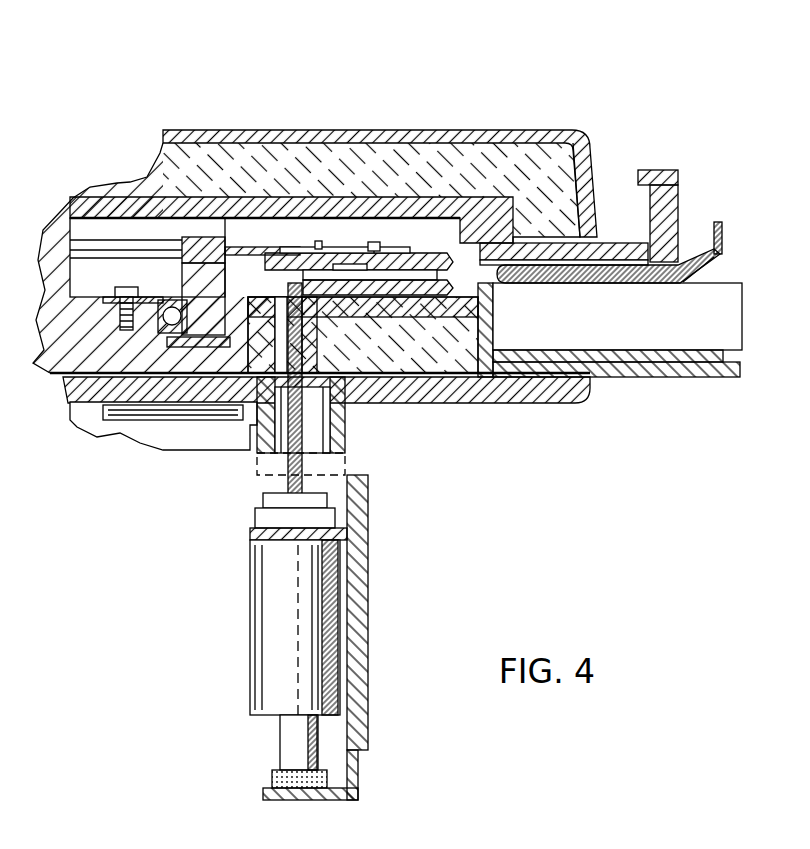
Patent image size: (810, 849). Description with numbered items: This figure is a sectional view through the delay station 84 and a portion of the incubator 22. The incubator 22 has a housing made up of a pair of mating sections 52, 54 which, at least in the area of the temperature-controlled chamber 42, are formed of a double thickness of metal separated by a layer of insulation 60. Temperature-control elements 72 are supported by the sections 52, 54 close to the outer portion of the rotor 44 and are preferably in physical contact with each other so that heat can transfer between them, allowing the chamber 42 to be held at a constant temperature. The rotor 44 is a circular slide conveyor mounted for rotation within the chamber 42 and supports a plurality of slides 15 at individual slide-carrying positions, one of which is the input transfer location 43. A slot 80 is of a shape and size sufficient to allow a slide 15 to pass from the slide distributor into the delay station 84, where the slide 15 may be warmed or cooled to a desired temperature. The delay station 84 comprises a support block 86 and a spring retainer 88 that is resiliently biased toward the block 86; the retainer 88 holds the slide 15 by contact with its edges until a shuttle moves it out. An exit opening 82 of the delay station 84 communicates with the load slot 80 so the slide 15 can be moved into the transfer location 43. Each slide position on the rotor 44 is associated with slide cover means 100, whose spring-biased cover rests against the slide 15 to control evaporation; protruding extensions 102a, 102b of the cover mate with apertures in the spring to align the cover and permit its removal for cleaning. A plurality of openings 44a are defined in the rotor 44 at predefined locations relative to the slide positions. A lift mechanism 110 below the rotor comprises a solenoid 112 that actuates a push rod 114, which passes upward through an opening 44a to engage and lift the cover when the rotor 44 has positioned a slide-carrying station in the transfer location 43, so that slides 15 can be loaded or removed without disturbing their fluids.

The incubator 22 is at (299, 108).
The slide cover means 100 is at (250, 232).
The layer of insulation 60 is at (347, 165).
The temperature-controlled chamber 42 is at (363, 233).
The transfer location 43 is at (478, 265).
The slot 80 is at (445, 236).
The housing section 52 is at (583, 128).
The delay station 84 is at (622, 183).
The spring retainer 88 is at (724, 235).
The slide 15 is at (683, 282).
The exit opening 82 is at (537, 283).
The support block 86 is at (703, 320).
The housing section 54 is at (515, 392).
The temperature-control element 72 is at (128, 200).
The rotor 44 is at (215, 322).
The opening 44a is at (350, 330).
The push rod 114 is at (290, 472).
The solenoid 112 is at (338, 642).
The lift mechanism 110 is at (371, 715).
The protruding extension 102a is at (380, 240).
The protruding extension 102b is at (320, 245).